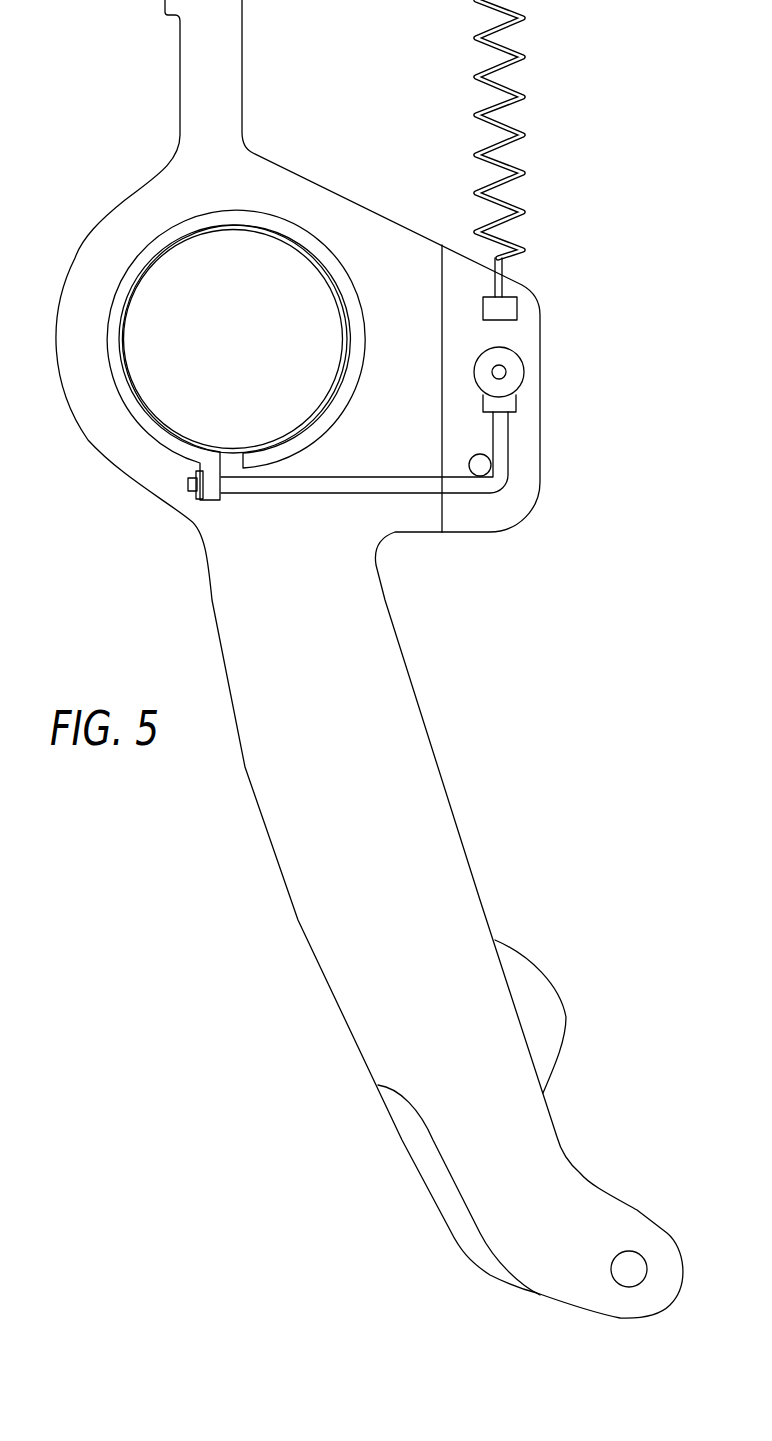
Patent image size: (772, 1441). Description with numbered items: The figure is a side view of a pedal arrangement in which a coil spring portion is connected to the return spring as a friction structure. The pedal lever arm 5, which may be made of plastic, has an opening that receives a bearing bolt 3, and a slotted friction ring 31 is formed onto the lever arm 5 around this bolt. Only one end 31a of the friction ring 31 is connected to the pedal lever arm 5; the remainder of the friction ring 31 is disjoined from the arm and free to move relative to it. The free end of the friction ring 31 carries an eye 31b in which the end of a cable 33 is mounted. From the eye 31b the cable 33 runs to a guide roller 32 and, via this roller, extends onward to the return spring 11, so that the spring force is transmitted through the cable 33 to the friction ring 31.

The bearing bolt 3 is at (255, 344).
The pedal lever arm 5 is at (308, 617).
The return spring 11 is at (519, 123).
The slotted friction ring 31 is at (245, 333).
The end of the friction ring 31a is at (315, 428).
The eye 31b is at (212, 495).
The guide roller 32 is at (478, 473).
The cable 33 is at (248, 488).